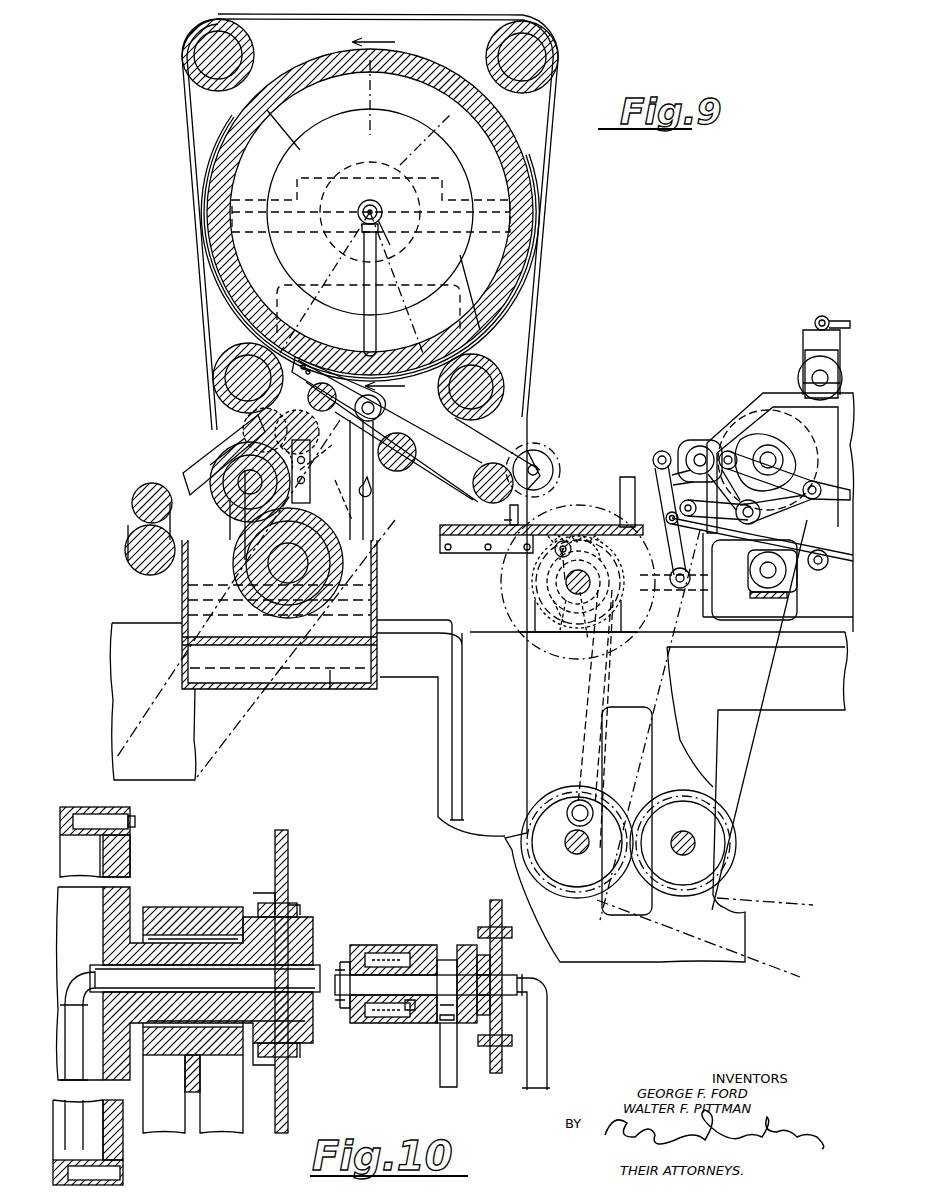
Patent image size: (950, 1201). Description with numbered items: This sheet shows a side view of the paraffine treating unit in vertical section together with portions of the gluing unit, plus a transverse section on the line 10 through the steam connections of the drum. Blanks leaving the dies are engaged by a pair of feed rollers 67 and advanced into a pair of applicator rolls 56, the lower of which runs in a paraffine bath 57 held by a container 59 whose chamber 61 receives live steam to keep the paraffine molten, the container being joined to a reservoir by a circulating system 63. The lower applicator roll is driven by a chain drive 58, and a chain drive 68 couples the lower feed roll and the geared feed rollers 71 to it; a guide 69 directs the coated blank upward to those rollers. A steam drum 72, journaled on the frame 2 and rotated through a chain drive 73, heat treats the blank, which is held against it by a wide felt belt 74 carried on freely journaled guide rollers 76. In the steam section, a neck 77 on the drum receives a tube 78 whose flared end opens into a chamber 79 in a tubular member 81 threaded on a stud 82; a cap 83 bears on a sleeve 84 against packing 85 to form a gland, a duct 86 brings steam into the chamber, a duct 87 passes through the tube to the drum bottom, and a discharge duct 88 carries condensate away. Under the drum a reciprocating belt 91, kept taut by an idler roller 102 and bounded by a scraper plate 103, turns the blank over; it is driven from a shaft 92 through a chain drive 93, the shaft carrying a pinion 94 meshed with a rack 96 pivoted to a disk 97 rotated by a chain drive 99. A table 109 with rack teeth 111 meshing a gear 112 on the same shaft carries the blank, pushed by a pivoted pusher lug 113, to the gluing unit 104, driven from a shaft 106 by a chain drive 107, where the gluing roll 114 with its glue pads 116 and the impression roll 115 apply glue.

In FIG. 9, the frame 2 is at (112, 652).
In FIG. 10, the frame 2 is at (200, 907).
In FIG. 9, the section line 10— 10 is at (378, 212).
In FIG. 9, the applicator rolls 56 is at (342, 560).
In FIG. 9, the paraffine bath 57 is at (355, 598).
In FIG. 9, the chain drive 58 is at (160, 668).
In FIG. 9, the container 59 is at (378, 612).
In FIG. 9, the chamber 61 is at (332, 689).
In FIG. 9, the circulating system 63 is at (462, 712).
In FIG. 9, the feed rollers 67 is at (130, 545).
In FIG. 9, the chain drive 68 is at (188, 478).
In FIG. 9, the guide 69 is at (298, 468).
In FIG. 9, the feed rollers 71 is at (475, 600).
In FIG. 9, the steam drum 72 is at (505, 165).
In FIG. 10, the steam drum 72 is at (92, 925).
In FIG. 9, the chain drive 73 is at (280, 275).
In FIG. 10, the chain drive 73 is at (288, 858).
In FIG. 9, the belt 74 is at (275, 20).
In FIG. 10, the belt 74 is at (72, 807).
In FIG. 9, the guide rollers 76 is at (205, 58).
In FIG. 9, the neck 77 is at (368, 200).
In FIG. 10, the neck 77 is at (318, 960).
In FIG. 10, the tube 78 is at (340, 1000).
In FIG. 10, the chamber 79 is at (443, 958).
In FIG. 10, the tubular member 81 is at (465, 945).
In FIG. 10, the stud 82 is at (492, 960).
In FIG. 10, the cap 83 is at (380, 945).
In FIG. 10, the sleeve 84 is at (372, 1023).
In FIG. 10, the packing 85 is at (410, 1023).
In FIG. 10, the duct 86 is at (440, 1082).
In FIG. 9, the duct 87 is at (364, 270).
In FIG. 10, the duct 87 is at (100, 968).
In FIG. 10, the discharge duct 88 is at (547, 1040).
In FIG. 9, the reciprocating belt 91 is at (440, 492).
In FIG. 9, the shaft 92 is at (580, 600).
In FIG. 9, the chain drive 93 is at (560, 468).
In FIG. 9, the pinion 94 is at (612, 588).
In FIG. 9, the reciprocating rack 96 is at (606, 668).
In FIG. 9, the disk 97 is at (557, 790).
In FIG. 9, the chain drive 99 is at (782, 905).
In FIG. 9, the idler roller 102 is at (417, 455).
In FIG. 9, the plate 103 is at (318, 358).
In FIG. 9, the gluing unit 104 is at (800, 340).
In FIG. 9, the shaft 106 is at (683, 835).
In FIG. 9, the chain drive 107 is at (760, 778).
In FIG. 9, the reciprocating table 109 is at (735, 517).
In FIG. 9, the rack teeth 111 is at (573, 522).
In FIG. 9, the gear 112 is at (598, 530).
In FIG. 9, the pusher lug 113 is at (520, 512).
In FIG. 9, the gluing roll 114 is at (812, 434).
In FIG. 9, the impression roll 115 is at (755, 598).
In FIG. 9, the glue pads 116 is at (768, 394).